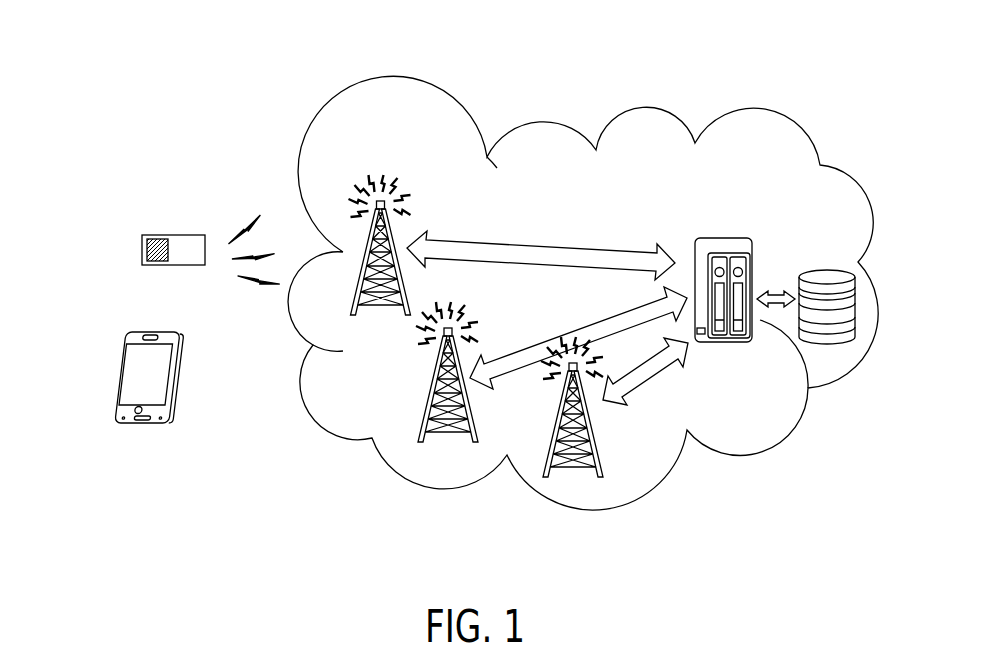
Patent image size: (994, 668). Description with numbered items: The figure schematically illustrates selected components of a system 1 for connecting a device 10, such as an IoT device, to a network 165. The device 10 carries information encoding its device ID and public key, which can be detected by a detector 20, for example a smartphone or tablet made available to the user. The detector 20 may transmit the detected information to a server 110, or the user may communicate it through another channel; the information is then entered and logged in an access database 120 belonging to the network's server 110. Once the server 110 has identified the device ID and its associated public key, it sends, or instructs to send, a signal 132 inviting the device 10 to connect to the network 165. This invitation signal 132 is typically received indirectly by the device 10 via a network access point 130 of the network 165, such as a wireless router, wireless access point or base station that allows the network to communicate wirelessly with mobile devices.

The system 1 is at (818, 97).
The device 10 is at (143, 248).
The detector 20 is at (123, 371).
The server 110 is at (725, 238).
The access database 120 is at (828, 270).
The network access point 130 is at (385, 305).
The invitation signal 132 is at (262, 220).
The network 165 is at (323, 436).